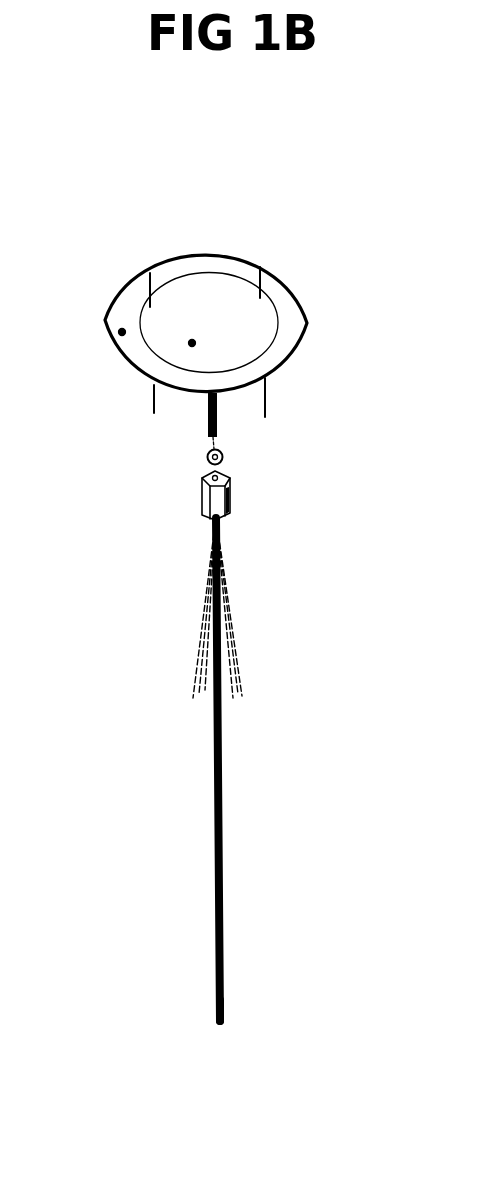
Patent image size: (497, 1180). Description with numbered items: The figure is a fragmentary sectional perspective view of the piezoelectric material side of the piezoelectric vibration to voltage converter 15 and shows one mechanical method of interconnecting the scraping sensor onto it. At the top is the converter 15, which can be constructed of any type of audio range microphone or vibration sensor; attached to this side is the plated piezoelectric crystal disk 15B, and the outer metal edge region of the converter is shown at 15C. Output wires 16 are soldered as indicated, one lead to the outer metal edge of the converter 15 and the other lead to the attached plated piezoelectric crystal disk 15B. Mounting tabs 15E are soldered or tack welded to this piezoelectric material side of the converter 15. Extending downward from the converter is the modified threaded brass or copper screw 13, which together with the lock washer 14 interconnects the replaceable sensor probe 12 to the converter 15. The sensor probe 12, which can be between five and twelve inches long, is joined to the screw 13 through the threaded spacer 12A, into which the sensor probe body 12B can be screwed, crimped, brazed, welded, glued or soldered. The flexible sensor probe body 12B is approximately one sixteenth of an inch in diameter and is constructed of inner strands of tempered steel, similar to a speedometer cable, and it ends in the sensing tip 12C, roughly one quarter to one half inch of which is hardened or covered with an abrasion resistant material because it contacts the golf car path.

The sensor probe 12 is at (197, 475).
The threaded spacer 12A is at (233, 513).
The sensor probe body 12B is at (222, 742).
The sensing tip 12C is at (230, 1025).
The threaded brass or copper screw 13 is at (202, 427).
The lock washer 14 is at (227, 452).
The piezoelectric vibration to voltage converter 15 is at (223, 255).
The piezoelectric crystal disk 15B is at (205, 297).
The outer rim 15C is at (118, 285).
The mounting tabs 15E is at (262, 297).
The output wires 16 is at (192, 343).